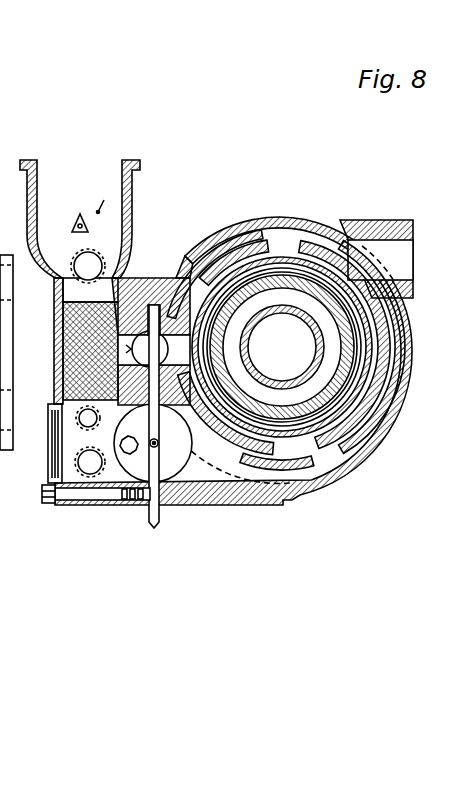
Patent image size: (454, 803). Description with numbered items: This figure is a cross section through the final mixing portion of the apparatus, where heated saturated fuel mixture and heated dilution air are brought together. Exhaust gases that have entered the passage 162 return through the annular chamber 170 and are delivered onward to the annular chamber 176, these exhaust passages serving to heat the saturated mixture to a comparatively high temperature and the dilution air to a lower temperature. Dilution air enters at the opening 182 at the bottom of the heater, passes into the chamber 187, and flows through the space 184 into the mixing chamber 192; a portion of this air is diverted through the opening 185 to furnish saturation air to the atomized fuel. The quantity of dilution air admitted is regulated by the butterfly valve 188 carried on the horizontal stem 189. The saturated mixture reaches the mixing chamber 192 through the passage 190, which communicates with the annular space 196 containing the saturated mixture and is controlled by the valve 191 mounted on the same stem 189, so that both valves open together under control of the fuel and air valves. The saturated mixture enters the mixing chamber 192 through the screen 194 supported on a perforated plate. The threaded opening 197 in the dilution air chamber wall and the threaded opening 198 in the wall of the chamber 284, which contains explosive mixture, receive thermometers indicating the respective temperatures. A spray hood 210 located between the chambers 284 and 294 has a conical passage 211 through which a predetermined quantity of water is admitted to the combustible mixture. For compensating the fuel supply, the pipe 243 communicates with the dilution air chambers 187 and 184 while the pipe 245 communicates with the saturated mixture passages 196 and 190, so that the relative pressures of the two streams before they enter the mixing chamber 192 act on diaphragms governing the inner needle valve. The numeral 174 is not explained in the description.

The passage 162 is at (282, 347).
The annular chamber 170 is at (282, 347).
The screw 174 is at (88, 420).
The annular chamber 176 is at (355, 425).
The opening 182 is at (187, 473).
The space 184 is at (88, 440).
The opening 185 is at (403, 255).
The chamber 187 is at (263, 228).
The butterfly valve 188 is at (180, 455).
The horizontal stem 189 is at (153, 527).
The passage 190 is at (190, 262).
The valve 191 is at (182, 343).
The mixing chamber 192 is at (60, 300).
The screen 194 is at (83, 340).
The annular space 196 is at (310, 466).
The threaded opening 197 is at (88, 475).
The threaded opening 198 is at (126, 330).
The spray hood 210 is at (80, 214).
The conical passage 211 is at (98, 212).
The pipe 243 is at (128, 455).
The pipe 245 is at (147, 336).
The chamber 284 is at (62, 278).
The chamber 294 is at (97, 212).